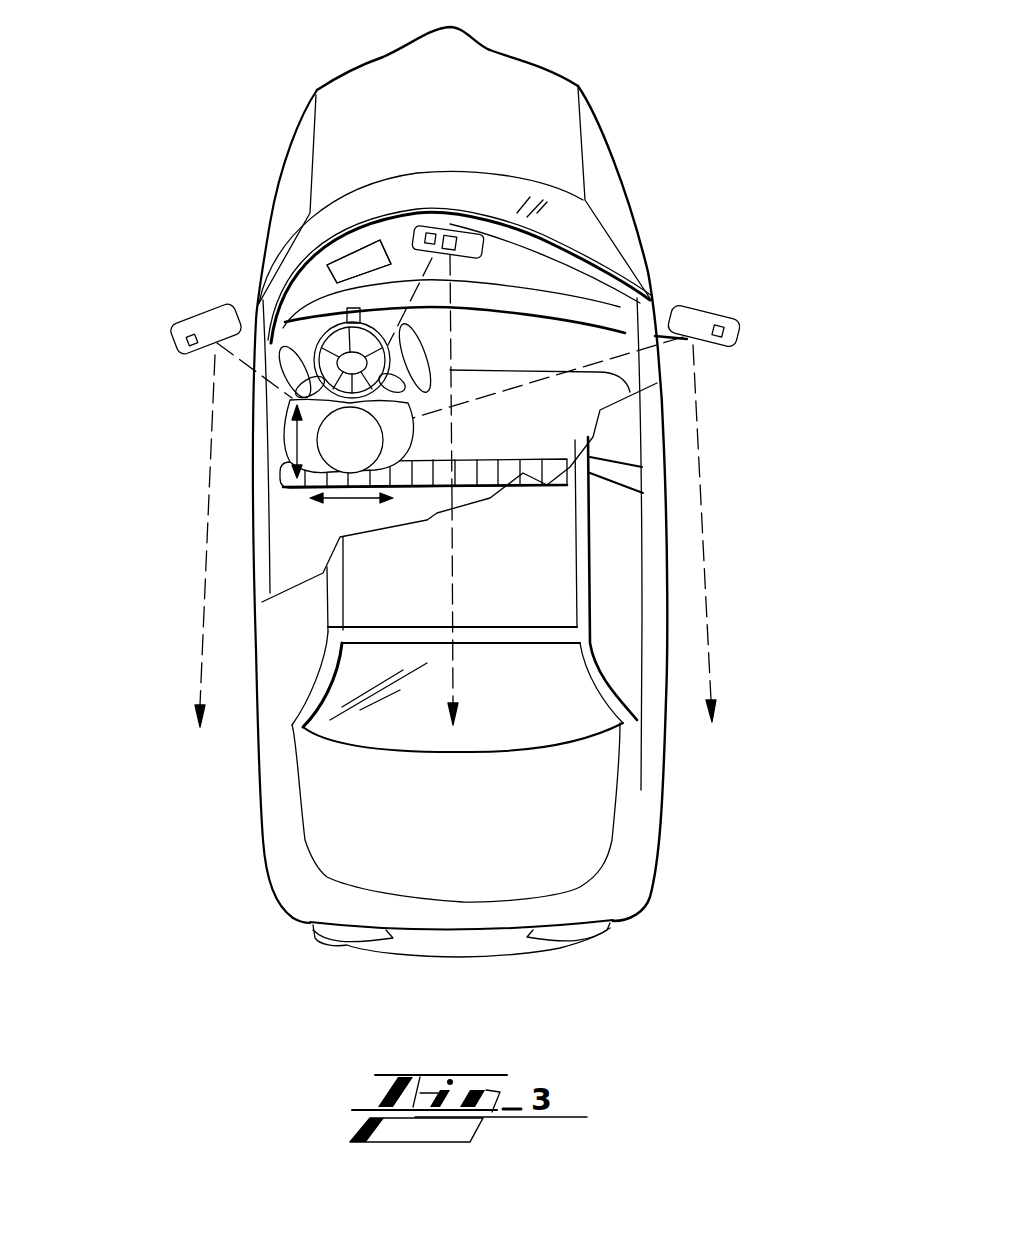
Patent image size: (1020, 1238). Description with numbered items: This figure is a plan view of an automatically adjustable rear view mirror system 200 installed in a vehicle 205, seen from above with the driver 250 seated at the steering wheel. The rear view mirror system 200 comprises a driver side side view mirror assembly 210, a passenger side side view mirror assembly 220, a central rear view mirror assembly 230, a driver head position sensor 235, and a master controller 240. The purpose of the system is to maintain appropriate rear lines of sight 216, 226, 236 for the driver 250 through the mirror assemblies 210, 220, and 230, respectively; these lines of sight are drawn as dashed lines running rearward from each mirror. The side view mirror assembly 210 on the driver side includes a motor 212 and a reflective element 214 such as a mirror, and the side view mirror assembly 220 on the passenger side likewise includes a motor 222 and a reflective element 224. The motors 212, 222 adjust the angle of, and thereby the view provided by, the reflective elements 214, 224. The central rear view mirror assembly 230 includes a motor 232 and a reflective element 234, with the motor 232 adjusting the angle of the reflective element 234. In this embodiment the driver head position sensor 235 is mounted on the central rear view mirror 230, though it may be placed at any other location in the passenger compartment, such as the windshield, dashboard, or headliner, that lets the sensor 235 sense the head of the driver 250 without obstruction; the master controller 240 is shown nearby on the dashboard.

The automatically adjustable rear view mirror system 200 is at (766, 150).
The vehicle 205 is at (358, 68).
The side view mirror assembly 210 is at (213, 318).
The motor 212 is at (178, 322).
The reflective element 214 is at (192, 354).
The rear line of sight 216 is at (203, 672).
The side view mirror assembly 220 is at (677, 300).
The motor 222 is at (717, 326).
The reflective element 224 is at (712, 340).
The rear line of sight 226 is at (708, 603).
The central rear view mirror assembly 230 is at (358, 255).
The motor 232 is at (456, 345).
The reflective element 234 is at (452, 318).
The driver head position sensor 235 is at (433, 232).
The rear line of sight 236 is at (452, 677).
The master controller 240 is at (357, 245).
The driver 250 is at (283, 496).